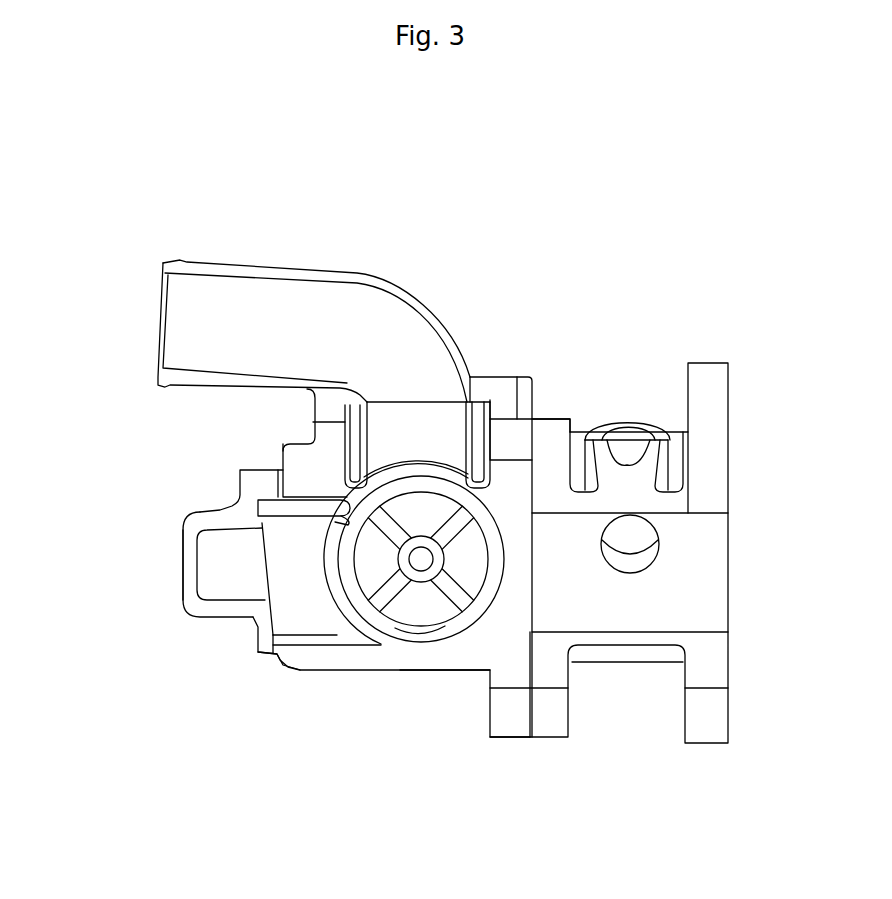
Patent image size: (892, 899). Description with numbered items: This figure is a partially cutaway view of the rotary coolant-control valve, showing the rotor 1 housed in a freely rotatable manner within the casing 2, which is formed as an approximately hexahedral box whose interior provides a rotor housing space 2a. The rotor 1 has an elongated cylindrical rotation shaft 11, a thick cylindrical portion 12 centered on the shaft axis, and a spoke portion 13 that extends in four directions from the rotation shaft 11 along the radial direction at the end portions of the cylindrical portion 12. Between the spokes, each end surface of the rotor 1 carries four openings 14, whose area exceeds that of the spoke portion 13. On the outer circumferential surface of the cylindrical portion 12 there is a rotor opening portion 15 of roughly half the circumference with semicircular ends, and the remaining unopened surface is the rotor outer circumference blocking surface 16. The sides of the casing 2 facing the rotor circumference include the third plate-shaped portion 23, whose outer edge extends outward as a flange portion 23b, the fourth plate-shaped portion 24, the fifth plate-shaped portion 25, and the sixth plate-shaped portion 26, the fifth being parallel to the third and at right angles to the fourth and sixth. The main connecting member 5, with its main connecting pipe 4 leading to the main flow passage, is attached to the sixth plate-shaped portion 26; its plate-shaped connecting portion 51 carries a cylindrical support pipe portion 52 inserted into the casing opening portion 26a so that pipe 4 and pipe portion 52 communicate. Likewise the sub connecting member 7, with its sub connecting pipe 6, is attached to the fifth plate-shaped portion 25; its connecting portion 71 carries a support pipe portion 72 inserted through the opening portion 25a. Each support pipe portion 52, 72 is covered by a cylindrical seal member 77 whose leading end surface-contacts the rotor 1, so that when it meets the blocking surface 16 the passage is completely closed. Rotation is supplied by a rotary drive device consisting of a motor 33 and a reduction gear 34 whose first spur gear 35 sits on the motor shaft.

The rotor 1 is at (429, 625).
The casing 2 is at (447, 662).
The rotor housing space 2a is at (468, 648).
The main connecting pipe 4 is at (306, 272).
The main connecting member 5 is at (503, 387).
The sub connecting pipe 6 is at (217, 613).
The sub connecting member 7 is at (256, 482).
The rotation shaft 11 is at (417, 580).
The cylindrical portion 12 is at (405, 585).
The spoke portion 13 is at (487, 560).
The opening 14 is at (467, 497).
The rotor opening portion 15 is at (420, 617).
The rotor outer circumference blocking surface 16 is at (330, 437).
The third plate-shaped portion 23 is at (535, 448).
The flange portion 23b is at (508, 730).
The fourth plate-shaped portion 24 is at (472, 673).
The fifth plate-shaped portion 25 is at (277, 458).
The opening portion 25a is at (190, 550).
The sixth plate-shaped portion 26 is at (291, 441).
The casing opening portion 26a is at (478, 432).
The motor 33 is at (543, 727).
The reduction gear 34 is at (553, 672).
The first spur gear 35 is at (713, 727).
The connecting portion 51 is at (489, 387).
The support pipe portion 52 is at (368, 433).
The connecting portion 71 is at (287, 673).
The support pipe portion 72 is at (302, 507).
The seal member 77 is at (470, 484).